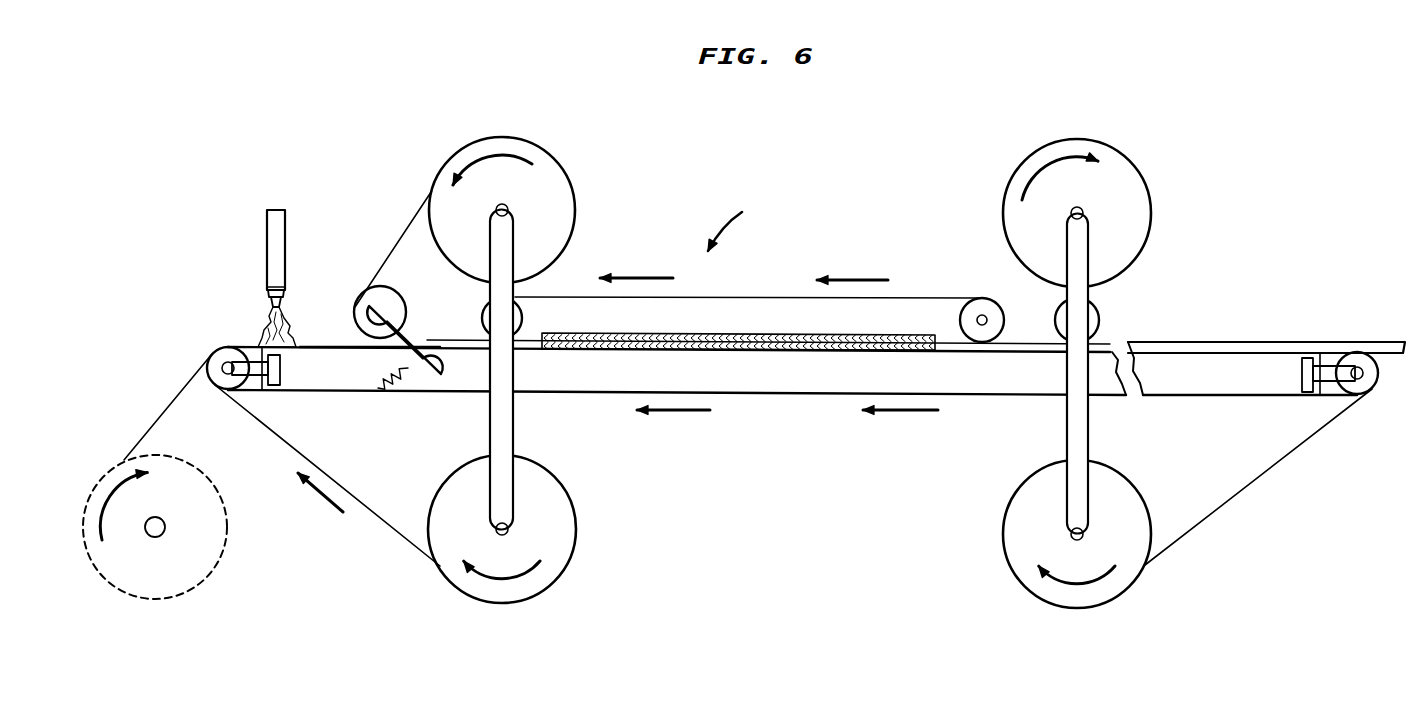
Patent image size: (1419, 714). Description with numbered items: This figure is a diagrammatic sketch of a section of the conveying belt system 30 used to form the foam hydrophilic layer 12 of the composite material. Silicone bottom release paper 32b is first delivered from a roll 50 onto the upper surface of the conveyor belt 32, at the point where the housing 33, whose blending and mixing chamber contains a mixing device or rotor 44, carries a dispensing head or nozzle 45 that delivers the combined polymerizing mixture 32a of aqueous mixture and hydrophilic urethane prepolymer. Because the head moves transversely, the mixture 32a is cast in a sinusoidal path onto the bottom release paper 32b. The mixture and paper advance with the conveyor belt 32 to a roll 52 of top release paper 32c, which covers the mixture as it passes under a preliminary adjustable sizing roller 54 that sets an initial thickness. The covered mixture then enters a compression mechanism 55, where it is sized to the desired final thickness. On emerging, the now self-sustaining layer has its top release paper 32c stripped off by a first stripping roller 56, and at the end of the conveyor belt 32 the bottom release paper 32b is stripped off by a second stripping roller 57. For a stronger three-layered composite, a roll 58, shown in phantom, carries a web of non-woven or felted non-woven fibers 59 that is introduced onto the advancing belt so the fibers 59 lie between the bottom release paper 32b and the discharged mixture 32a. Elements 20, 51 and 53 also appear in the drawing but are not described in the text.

The foam hydrophilic layer 12 is at (1222, 342).
The conveyor belt 20 is at (450, 392).
The conveying belt system 30 is at (560, 392).
The conveyor belt 32 is at (327, 347).
The combined polymerizing mixture 32a is at (289, 322).
The bottom release paper 32b is at (283, 437).
The top release paper 32c is at (1062, 296).
The housing 33 is at (267, 250).
The mixing device or rotor 44 is at (217, 353).
The dispensing head or nozzle 45 is at (270, 301).
The roll of bottom release paper 50 is at (575, 537).
The drive line 51 is at (1245, 490).
The roll of top release paper 52 is at (553, 155).
The drive line 53 is at (410, 225).
The preliminary adjustable sizing roller 54 is at (403, 298).
The compression mechanism 55 is at (734, 220).
The first stripping roller 56 is at (1012, 180).
The second stripping roller 57 is at (1008, 502).
The roll of non-woven fibers 58 is at (225, 540).
The web of non-woven fibers 59 is at (172, 402).